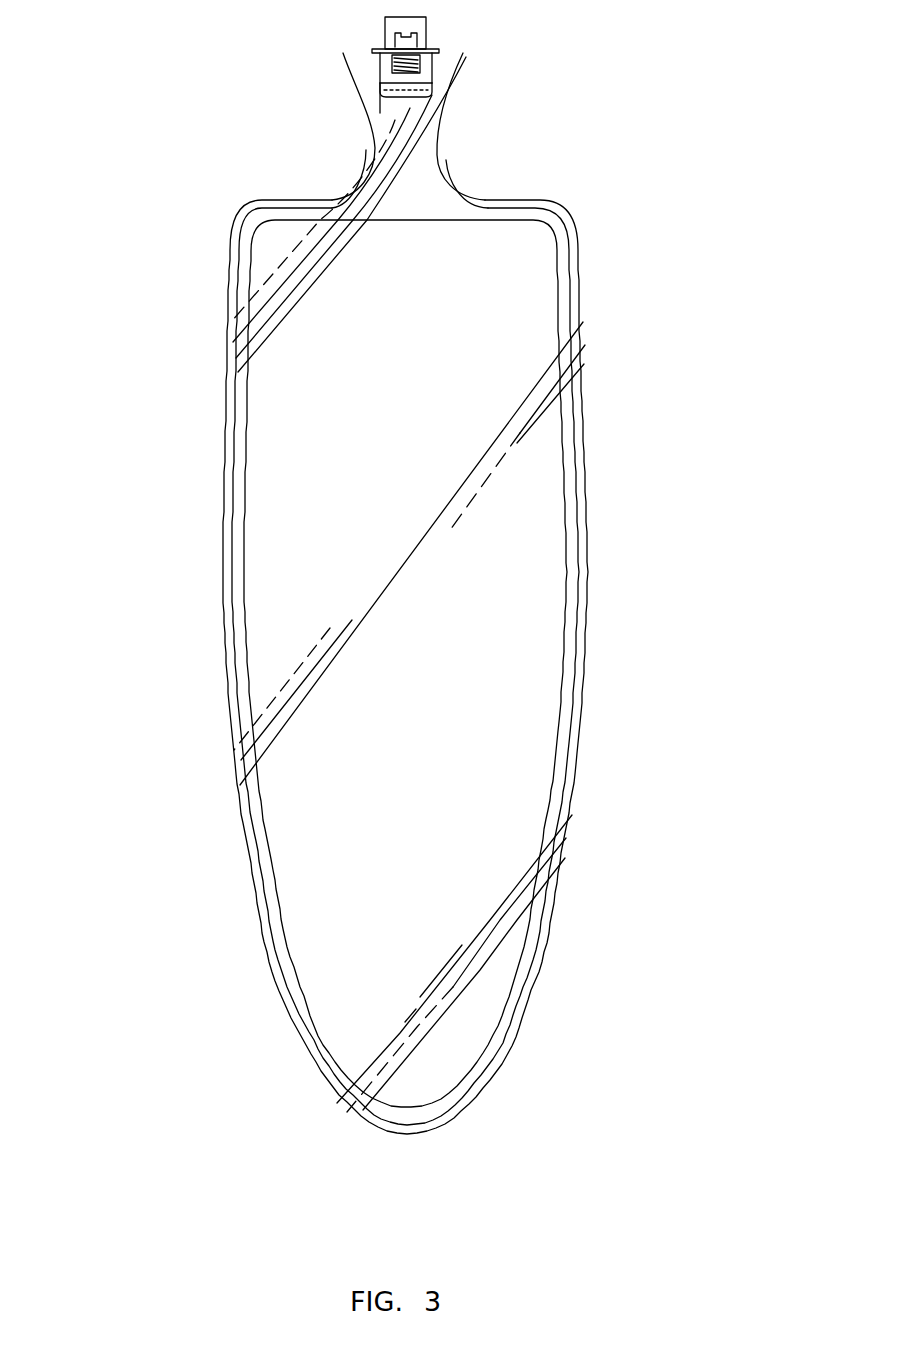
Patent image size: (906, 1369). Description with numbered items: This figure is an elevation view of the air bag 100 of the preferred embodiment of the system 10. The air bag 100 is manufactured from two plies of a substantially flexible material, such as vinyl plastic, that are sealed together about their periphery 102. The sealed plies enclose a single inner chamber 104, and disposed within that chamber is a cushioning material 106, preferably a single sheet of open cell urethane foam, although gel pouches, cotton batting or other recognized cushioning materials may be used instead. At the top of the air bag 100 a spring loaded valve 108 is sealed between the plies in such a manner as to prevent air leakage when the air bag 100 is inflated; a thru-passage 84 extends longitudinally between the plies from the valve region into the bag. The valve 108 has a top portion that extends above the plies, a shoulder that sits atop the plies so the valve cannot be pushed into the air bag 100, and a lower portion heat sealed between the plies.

The hydration system 10 is at (188, 663).
The thru-passage 84 is at (397, 118).
The air bag 100 is at (669, 319).
The periphery 102 is at (570, 783).
The inner chamber 104 is at (550, 228).
The cushioning material 106 is at (520, 570).
The spring loaded valve 108 is at (430, 48).